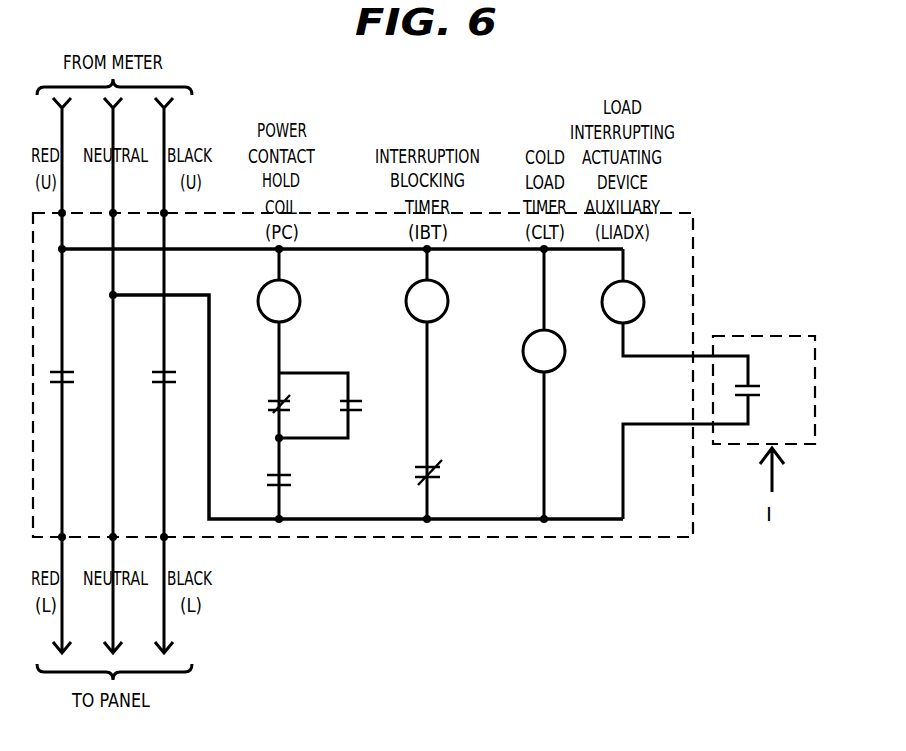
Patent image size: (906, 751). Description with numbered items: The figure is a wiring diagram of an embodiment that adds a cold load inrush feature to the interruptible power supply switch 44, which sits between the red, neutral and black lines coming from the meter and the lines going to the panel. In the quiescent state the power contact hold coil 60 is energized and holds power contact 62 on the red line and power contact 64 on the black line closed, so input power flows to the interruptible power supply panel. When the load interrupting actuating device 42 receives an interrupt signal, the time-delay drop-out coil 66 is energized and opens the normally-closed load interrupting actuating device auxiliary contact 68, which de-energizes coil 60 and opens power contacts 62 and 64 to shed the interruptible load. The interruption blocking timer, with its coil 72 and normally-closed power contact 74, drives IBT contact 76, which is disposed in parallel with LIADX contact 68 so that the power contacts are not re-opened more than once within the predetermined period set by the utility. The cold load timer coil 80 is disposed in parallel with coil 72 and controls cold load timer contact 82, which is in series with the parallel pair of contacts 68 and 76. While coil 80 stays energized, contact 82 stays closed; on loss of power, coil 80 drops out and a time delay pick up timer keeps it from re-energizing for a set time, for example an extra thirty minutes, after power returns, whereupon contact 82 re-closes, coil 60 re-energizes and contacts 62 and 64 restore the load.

The load interrupting actuating device 42 is at (757, 336).
The interruptible power supply switch 44 is at (357, 538).
The power contact (PC) hold coil 60 is at (265, 287).
The power contact 62 is at (67, 381).
The power contact 64 is at (160, 371).
The time-delay drop-out (TDDO) coil 66 is at (608, 289).
The load interrupting actuating device auxiliary (LIADX) contact 68 is at (273, 413).
The interruption blocking timer coil 72 is at (412, 290).
The power contact 74 is at (420, 484).
The IBT contact 76 is at (360, 403).
The cold load timer (CLT) coil 80 is at (559, 366).
The cold load timer contact 82 is at (290, 477).